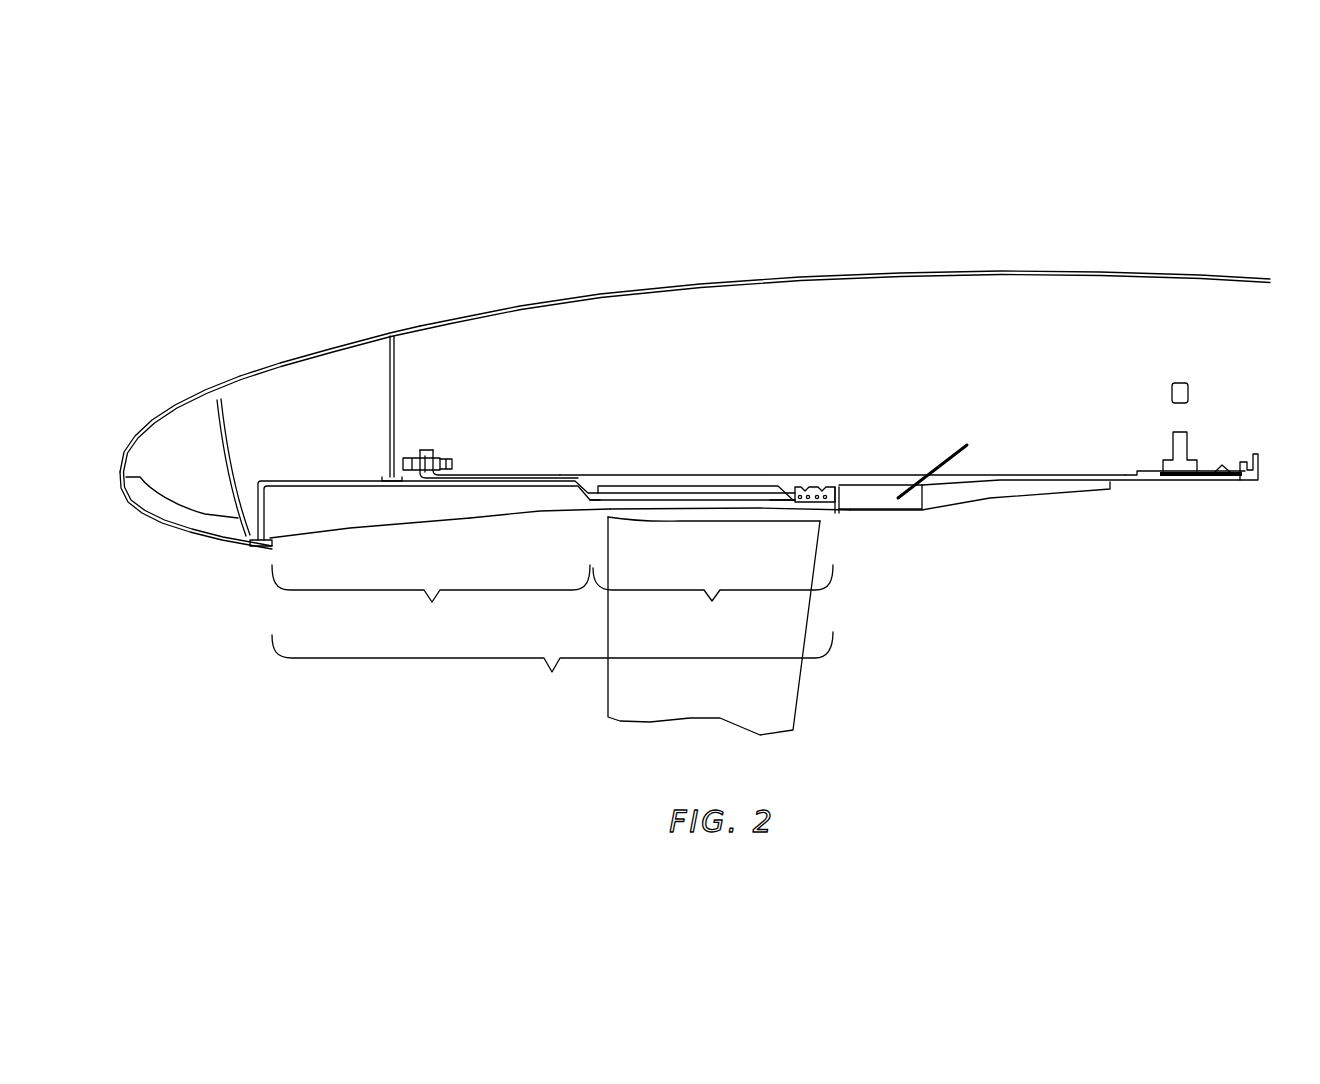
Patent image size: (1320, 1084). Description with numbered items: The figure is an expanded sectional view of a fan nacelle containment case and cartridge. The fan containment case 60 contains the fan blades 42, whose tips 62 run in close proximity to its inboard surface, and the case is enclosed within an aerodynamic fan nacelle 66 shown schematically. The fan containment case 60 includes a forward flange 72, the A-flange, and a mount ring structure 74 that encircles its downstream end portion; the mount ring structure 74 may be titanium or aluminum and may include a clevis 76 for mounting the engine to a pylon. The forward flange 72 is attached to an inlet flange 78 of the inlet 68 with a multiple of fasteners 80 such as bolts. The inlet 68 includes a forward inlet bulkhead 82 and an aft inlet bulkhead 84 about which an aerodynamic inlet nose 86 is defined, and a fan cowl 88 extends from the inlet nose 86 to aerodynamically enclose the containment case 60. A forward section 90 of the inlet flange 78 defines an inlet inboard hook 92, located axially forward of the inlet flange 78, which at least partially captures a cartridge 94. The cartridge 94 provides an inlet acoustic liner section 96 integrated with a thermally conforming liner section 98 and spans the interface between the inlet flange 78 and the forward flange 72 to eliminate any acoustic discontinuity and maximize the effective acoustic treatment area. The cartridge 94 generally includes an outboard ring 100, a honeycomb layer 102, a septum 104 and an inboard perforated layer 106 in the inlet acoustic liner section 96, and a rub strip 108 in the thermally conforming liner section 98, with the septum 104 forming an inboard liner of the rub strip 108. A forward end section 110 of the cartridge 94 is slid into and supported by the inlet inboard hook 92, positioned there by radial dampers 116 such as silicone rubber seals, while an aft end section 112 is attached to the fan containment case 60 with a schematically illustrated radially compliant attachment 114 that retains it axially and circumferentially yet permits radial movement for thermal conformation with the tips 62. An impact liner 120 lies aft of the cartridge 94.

The fan blades 42 is at (777, 701).
The fan containment case 60 is at (917, 449).
The tips 62 is at (732, 519).
The fan nacelle 66 is at (937, 231).
The inlet 68 is at (322, 342).
The forward flange 72 is at (433, 443).
The mount ring structure 74 is at (1205, 452).
The clevis 76 is at (1185, 445).
The inlet flange 78 is at (416, 447).
The fasteners 80 is at (453, 464).
The forward inlet bulkhead 82 is at (223, 437).
The aft inlet bulkhead 84 is at (389, 386).
The inlet nose 86 is at (167, 415).
The fan cowl 88 is at (641, 292).
The forward section 90 is at (304, 478).
The inlet inboard hook 92 is at (258, 546).
The cartridge 94 is at (552, 668).
The inlet acoustic liner section 96 is at (431, 601).
The thermally conforming liner section 98 is at (713, 600).
The outboard ring 100 is at (589, 489).
The honeycomb layer 102 is at (523, 499).
The septum 104 is at (655, 502).
The inboard perforated layer 106 is at (492, 512).
The rub strip 108 is at (767, 507).
The forward end section 110 is at (293, 539).
The aft end section 112 is at (827, 518).
The radially compliant attachment 114 is at (821, 484).
The radial dampers 116 is at (366, 488).
The impact liner 120 is at (922, 467).